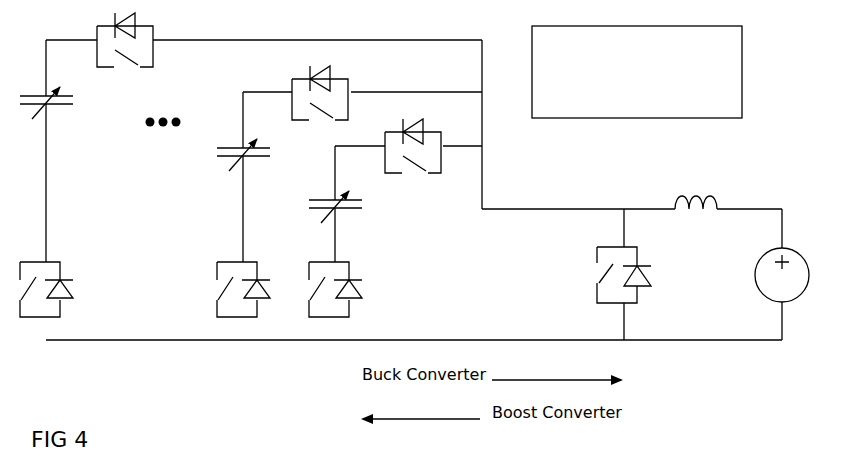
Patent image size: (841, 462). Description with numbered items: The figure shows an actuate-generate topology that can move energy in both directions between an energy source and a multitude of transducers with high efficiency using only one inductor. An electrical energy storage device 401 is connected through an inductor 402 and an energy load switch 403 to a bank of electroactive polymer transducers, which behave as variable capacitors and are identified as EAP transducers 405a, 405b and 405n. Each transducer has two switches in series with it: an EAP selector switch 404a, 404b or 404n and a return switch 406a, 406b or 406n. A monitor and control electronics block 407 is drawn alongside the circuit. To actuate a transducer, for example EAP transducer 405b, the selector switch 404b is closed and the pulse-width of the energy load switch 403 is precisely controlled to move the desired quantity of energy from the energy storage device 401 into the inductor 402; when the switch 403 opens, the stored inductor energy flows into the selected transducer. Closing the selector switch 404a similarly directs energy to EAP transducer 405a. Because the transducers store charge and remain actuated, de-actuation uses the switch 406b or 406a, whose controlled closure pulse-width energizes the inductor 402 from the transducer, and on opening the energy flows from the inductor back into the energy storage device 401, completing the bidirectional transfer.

The electrical energy storage device 401 is at (828, 317).
The inductor 402 is at (708, 239).
The energy load switch 403 is at (592, 284).
The EAP selector switch 404a is at (402, 318).
The EAP selector switch 404b is at (206, 318).
The EAP selector switch 404n is at (112, 318).
The EAP transducer 405a is at (380, 240).
The EAP transducer 405b is at (287, 187).
The EAP transducer 405n is at (89, 133).
The EAP switch 406a is at (445, 201).
The EAP switch 406b is at (323, 148).
The EAP switch 406n is at (152, 94).
The monitor and control electronics 407 is at (622, 106).